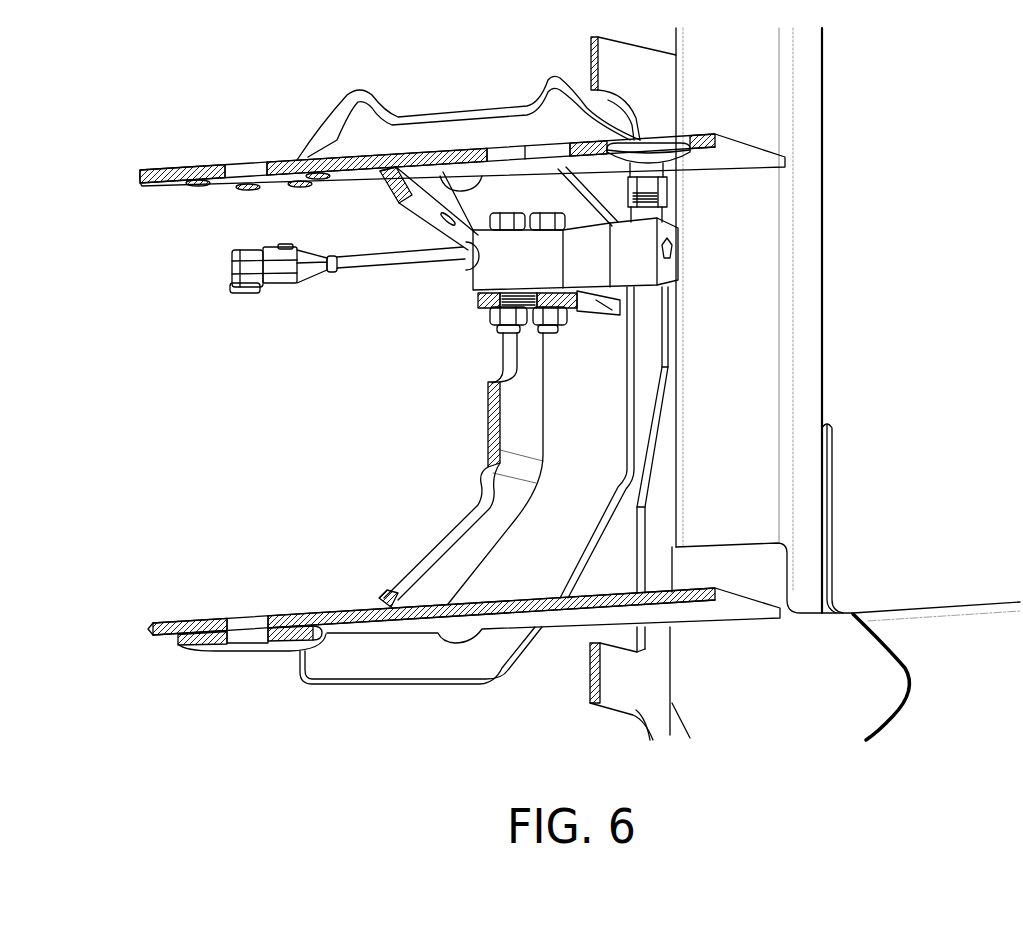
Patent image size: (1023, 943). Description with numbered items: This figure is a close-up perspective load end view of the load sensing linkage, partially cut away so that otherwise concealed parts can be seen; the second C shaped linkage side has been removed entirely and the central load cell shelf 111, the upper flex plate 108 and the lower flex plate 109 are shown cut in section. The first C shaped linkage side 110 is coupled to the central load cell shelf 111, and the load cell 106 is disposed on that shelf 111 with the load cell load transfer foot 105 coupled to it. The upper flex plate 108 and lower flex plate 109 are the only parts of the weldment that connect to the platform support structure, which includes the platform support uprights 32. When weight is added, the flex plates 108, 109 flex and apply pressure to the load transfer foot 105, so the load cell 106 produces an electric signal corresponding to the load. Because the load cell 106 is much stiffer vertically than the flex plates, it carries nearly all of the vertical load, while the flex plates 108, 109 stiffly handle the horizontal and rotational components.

The platform support uprights 32 is at (745, 370).
The load cell load transfer foot 105 is at (685, 172).
The load cell 106 is at (673, 270).
The upper flex plate 108 is at (703, 137).
The lower flex plate 109 is at (598, 594).
The first C shaped linkage side 110 is at (548, 536).
The central load cell shelf 111 is at (602, 306).